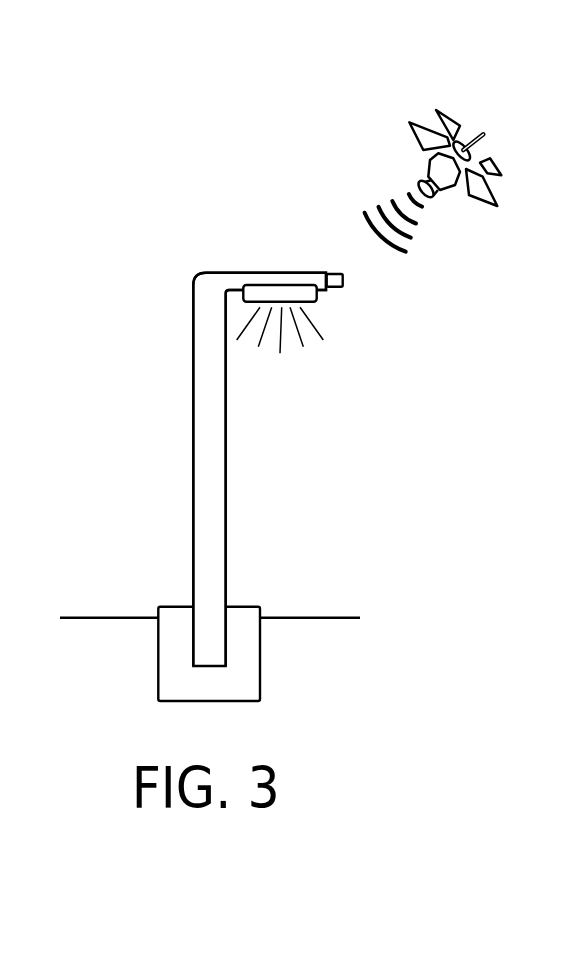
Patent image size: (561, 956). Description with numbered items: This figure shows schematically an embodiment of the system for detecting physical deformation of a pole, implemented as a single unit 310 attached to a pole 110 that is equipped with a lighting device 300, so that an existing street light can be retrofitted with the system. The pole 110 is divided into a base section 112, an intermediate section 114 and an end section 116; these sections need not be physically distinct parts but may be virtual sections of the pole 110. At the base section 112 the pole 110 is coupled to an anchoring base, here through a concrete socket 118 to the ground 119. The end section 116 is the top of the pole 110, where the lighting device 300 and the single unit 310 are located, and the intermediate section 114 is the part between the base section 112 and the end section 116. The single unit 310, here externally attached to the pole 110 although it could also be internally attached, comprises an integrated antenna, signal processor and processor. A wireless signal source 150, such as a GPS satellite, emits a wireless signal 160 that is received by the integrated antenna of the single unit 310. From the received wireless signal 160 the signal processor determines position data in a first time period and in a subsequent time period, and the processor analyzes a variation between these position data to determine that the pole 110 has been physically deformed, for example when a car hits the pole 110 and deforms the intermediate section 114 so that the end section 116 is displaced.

The pole 110 is at (238, 272).
The base section 112 is at (198, 575).
The intermediate section 114 is at (198, 448).
The end section 116 is at (198, 305).
The socket 118 is at (253, 657).
The ground 119 is at (317, 617).
The wireless signal source 150 is at (410, 100).
The wireless signal 160 is at (408, 245).
The lighting device 300 is at (288, 292).
The single unit 310 is at (343, 279).